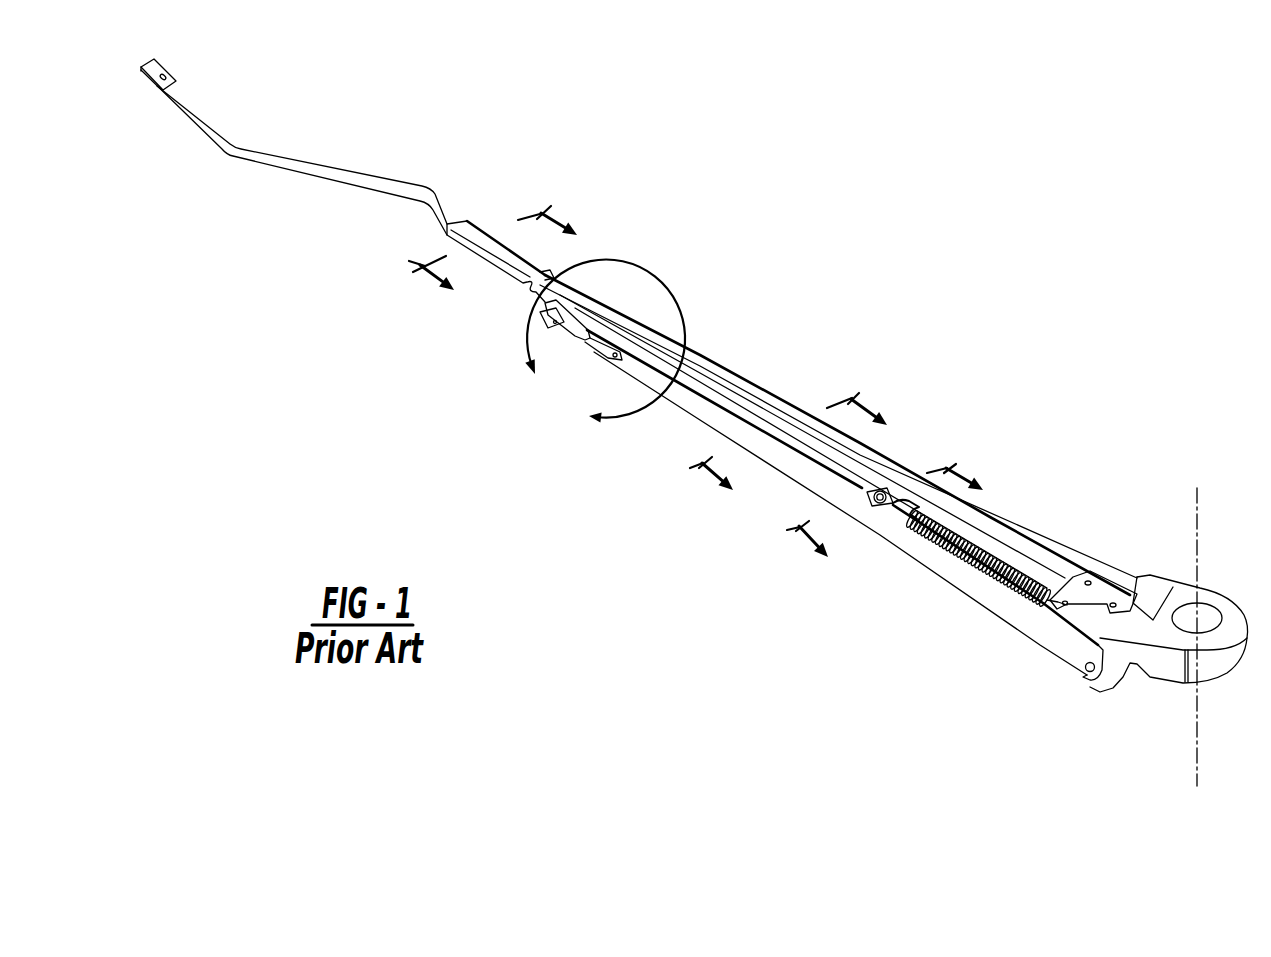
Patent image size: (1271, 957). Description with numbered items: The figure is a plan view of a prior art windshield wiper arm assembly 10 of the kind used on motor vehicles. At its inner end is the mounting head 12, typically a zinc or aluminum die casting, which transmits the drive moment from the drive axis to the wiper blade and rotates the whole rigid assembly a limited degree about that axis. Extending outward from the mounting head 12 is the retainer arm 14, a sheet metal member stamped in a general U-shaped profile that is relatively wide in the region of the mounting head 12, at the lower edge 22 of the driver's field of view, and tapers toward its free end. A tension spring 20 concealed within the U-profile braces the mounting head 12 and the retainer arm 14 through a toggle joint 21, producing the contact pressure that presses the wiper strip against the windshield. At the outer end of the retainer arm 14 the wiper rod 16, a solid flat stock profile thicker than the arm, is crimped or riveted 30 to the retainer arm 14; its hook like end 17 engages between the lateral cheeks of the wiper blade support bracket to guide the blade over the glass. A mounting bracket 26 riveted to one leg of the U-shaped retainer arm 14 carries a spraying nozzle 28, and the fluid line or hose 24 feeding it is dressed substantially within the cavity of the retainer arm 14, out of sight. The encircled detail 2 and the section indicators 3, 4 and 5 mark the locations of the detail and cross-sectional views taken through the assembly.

The windshield wiper arm assembly 10 is at (800, 249).
The mounting head 12 is at (1247, 603).
The retainer arm 14 is at (1024, 538).
The wiper rod 16 is at (313, 163).
The hook like end 17 is at (168, 72).
The tension spring 20 is at (1030, 574).
The toggle joint 21 is at (1022, 681).
The lower edge 22 is at (932, 611).
The fluid line or hose 24 is at (733, 397).
The mounting bracket 26 is at (604, 356).
The spraying nozzle 28 is at (543, 333).
The rivet 30 is at (879, 494).
The detail view 2 is at (605, 348).
The section line 3- 3 is at (478, 230).
The section line 4- 4 is at (774, 423).
The section line 5- 5 is at (902, 530).